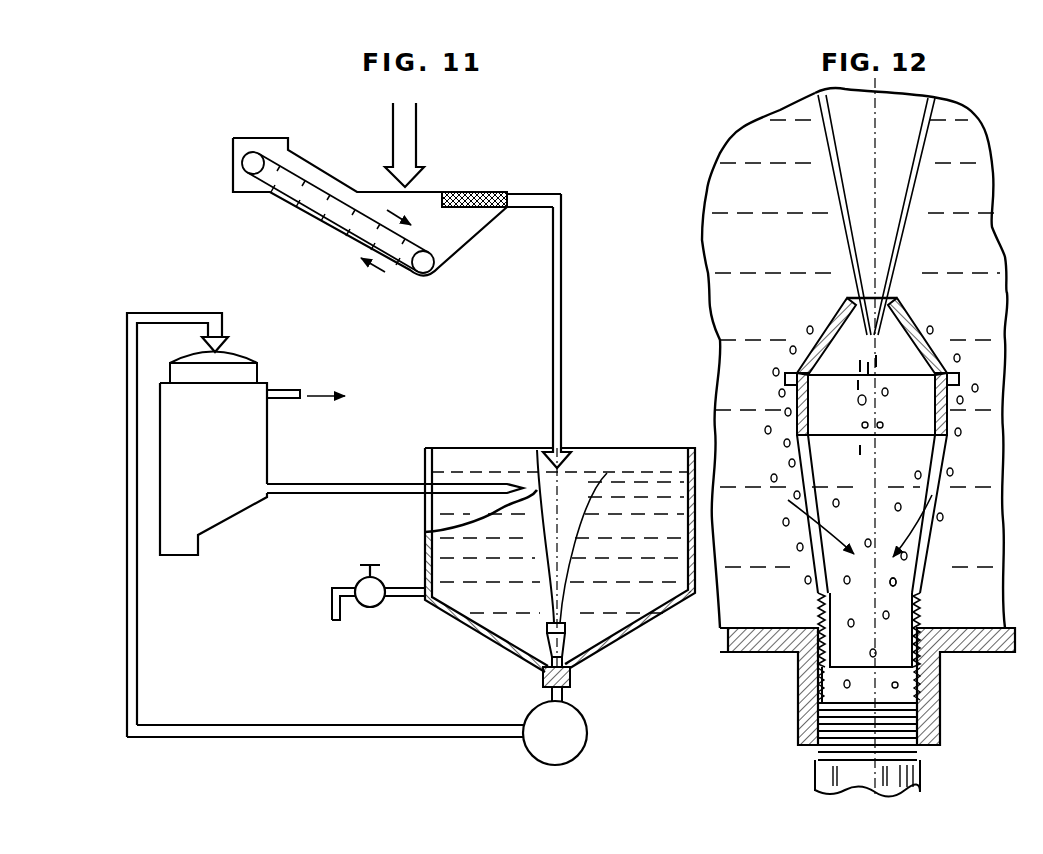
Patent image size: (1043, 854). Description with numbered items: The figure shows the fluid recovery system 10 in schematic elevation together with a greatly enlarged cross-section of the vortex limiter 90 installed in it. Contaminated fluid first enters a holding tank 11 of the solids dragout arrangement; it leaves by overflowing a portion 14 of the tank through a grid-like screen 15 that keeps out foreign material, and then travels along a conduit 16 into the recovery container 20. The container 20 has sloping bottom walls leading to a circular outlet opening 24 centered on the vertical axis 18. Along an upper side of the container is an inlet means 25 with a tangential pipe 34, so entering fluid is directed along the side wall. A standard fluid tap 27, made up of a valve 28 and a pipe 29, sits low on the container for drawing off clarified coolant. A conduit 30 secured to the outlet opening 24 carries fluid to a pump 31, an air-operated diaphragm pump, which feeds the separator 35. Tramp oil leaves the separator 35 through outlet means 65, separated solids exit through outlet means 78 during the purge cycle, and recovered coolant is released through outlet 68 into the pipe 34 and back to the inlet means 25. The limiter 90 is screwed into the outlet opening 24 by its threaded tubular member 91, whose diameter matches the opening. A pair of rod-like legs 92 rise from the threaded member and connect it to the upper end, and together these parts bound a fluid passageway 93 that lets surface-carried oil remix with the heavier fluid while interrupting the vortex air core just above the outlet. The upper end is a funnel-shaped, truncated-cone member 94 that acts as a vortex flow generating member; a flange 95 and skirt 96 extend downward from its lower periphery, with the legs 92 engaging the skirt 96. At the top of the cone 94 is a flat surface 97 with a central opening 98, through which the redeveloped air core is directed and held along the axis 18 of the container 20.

In FIG. 11, the recovery system 10 is at (586, 210).
In FIG. 11, the holding tank 11 is at (366, 187).
In FIG. 11, the overflow portion 14 is at (456, 189).
In FIG. 11, the grid-like screen 15 is at (487, 192).
In FIG. 11, the conduit 16 is at (563, 300).
In FIG. 11, the vertical axis 18 is at (574, 482).
In FIG. 12, the vertical axis 18 is at (878, 172).
In FIG. 11, the recovery container 20 is at (656, 436).
In FIG. 12, the recovery container 20 is at (720, 660).
In FIG. 11, the outlet opening 24 is at (547, 677).
In FIG. 12, the outlet opening 24 is at (820, 688).
In FIG. 11, the inlet means 25 is at (463, 491).
In FIG. 11, the fluid tap 27 is at (334, 633).
In FIG. 11, the valve 28 is at (356, 583).
In FIG. 11, the pipe 29 is at (405, 599).
In FIG. 11, the conduit 30 is at (140, 652).
In FIG. 12, the conduit 30 is at (813, 772).
In FIG. 11, the pump 31 is at (537, 747).
In FIG. 11, the pipe 34 is at (347, 490).
In FIG. 11, the separator 35 is at (256, 362).
In FIG. 11, the outlet means 65 is at (293, 390).
In FIG. 11, the outlet 68 is at (269, 483).
In FIG. 11, the outlet means 78 is at (180, 557).
In FIG. 11, the limiter 90 is at (578, 634).
In FIG. 12, the limiter 90 is at (963, 325).
In FIG. 12, the threaded tubular member 91 is at (818, 610).
In FIG. 12, the rod-like legs 92 is at (823, 549).
In FIG. 12, the fluid passageway 93 is at (894, 472).
In FIG. 12, the funnel-shaped member 94 is at (915, 320).
In FIG. 12, the flange 95 is at (960, 382).
In FIG. 12, the skirt 96 is at (947, 415).
In FIG. 12, the flat surface 97 is at (897, 297).
In FIG. 12, the opening 98 is at (870, 293).